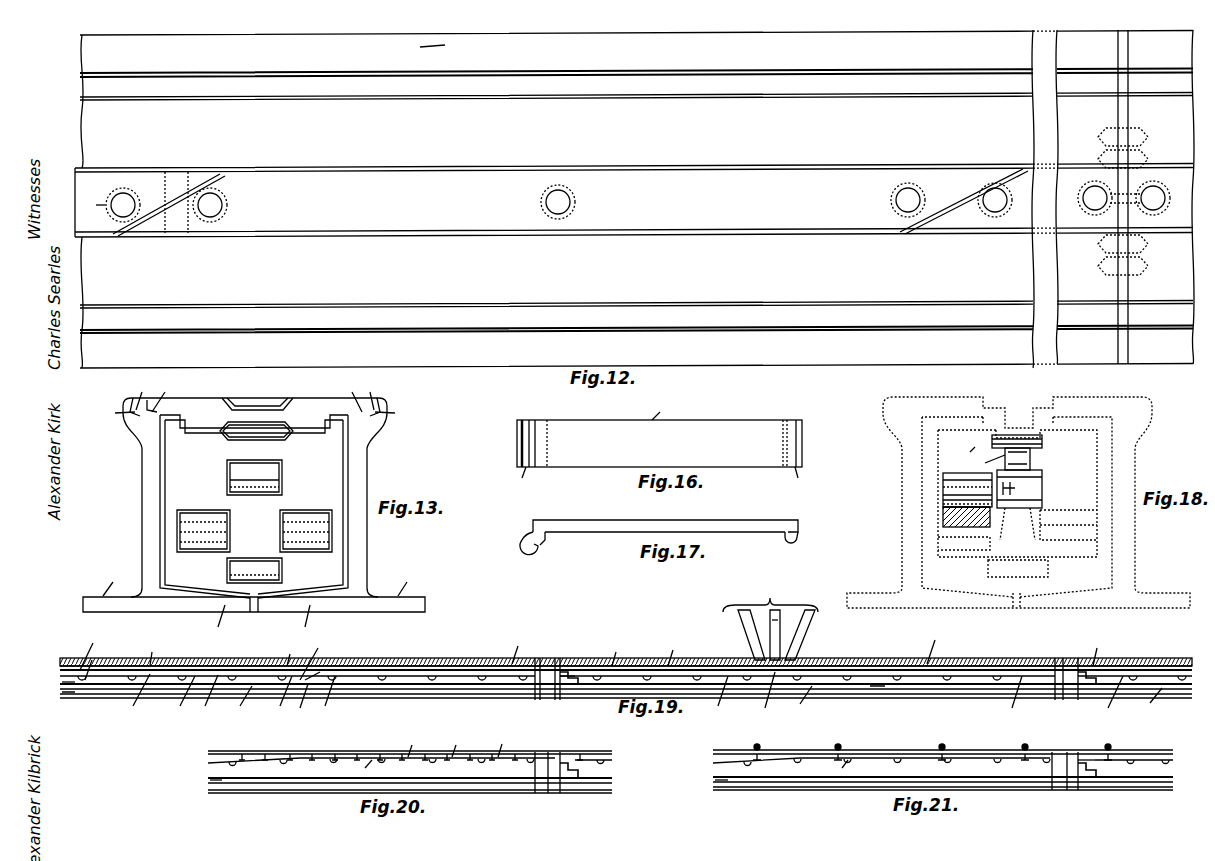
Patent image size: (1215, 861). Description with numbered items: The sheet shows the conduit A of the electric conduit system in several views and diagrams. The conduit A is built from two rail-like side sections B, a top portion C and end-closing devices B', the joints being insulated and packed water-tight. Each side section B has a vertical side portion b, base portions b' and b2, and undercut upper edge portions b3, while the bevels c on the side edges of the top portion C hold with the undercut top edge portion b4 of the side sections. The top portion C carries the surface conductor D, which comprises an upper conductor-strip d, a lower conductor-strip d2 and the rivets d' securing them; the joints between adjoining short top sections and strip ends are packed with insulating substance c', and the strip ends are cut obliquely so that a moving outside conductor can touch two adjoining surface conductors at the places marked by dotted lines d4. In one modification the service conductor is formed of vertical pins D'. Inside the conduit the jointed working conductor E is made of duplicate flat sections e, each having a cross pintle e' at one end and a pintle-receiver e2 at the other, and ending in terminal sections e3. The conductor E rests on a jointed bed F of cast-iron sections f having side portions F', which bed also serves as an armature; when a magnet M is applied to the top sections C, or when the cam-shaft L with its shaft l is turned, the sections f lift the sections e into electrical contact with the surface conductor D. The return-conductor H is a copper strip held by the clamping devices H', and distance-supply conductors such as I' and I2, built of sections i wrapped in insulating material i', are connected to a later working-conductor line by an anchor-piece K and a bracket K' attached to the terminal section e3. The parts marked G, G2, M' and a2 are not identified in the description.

In FIG. 12, the conduit A is at (852, 197).
In FIG. 13, the conduit A is at (256, 497).
In FIG. 19, the conduit A is at (626, 652).
In FIG. 20, the conduit A is at (411, 745).
In FIG. 21, the conduit A is at (944, 745).
In FIG. 12, the side rail-like section B is at (636, 200).
In FIG. 13, the side rail-like section B is at (254, 553).
In FIG. 18, the side rail-like section B is at (1018, 502).
In FIG. 19, the side rail-like section B is at (695, 701).
In FIG. 13, the end-closing device B' is at (254, 506).
In FIG. 19, the end-closing device B' is at (809, 662).
In FIG. 20, the end-closing device B' is at (548, 759).
In FIG. 21, the end-closing device B' is at (1065, 757).
In FIG. 12, the top portion C is at (757, 196).
In FIG. 13, the top portion C is at (197, 412).
In FIG. 19, the top portion C is at (1145, 668).
In FIG. 20, the top portion C is at (288, 757).
In FIG. 21, the top portion C is at (886, 757).
In FIG. 12, the surface electric conductor D is at (634, 201).
In FIG. 13, the surface electric conductor D is at (257, 392).
In FIG. 19, the surface electric conductor D is at (102, 660).
In FIG. 20, the surface electric conductor D is at (414, 744).
In FIG. 21, the vertical pin D' is at (929, 737).
In FIG. 18, the jointed working conductor E is at (1020, 455).
In FIG. 19, the jointed working conductor E is at (626, 679).
In FIG. 20, the jointed working conductor E is at (410, 768).
In FIG. 21, the jointed working conductor E is at (943, 767).
In FIG. 19, the jointed bed F is at (646, 700).
In FIG. 18, the side portion F' is at (963, 452).
In FIG. 18, the spring block G is at (1042, 445).
In FIG. 18, the lower spring guide G2 is at (1017, 532).
In FIG. 18, the return-conductor H is at (1017, 543).
In FIG. 19, the return-conductor H is at (626, 702).
In FIG. 20, the return-conductor H is at (410, 797).
In FIG. 21, the return-conductor H is at (943, 795).
In FIG. 18, the clamping device H' is at (1022, 503).
In FIG. 18, the distance-supply conductor I' is at (931, 528).
In FIG. 19, the distance-supply conductor I' is at (67, 680).
In FIG. 19, the distance-supply conductor I2 is at (472, 684).
In FIG. 20, the distance-supply conductor I2 is at (210, 775).
In FIG. 21, the distance-supply conductor I2 is at (714, 775).
In FIG. 18, the anchor-piece K is at (932, 517).
In FIG. 18, the bracket K' is at (1029, 489).
In FIG. 19, the cam-shaft L is at (282, 698).
In FIG. 19, the magnet M is at (770, 620).
In FIG. 19, the wrench prong M' is at (768, 630).
In FIG. 13, the cap notch a2 is at (257, 393).
In FIG. 13, the vertical side portion b is at (254, 523).
In FIG. 12, the base portion b' is at (565, 199).
In FIG. 13, the base portion b' is at (255, 587).
In FIG. 13, the base portion b2 is at (261, 621).
In FIG. 12, the undercut upper edge portion b3 is at (636, 200).
In FIG. 13, the undercut upper edge portion b3 is at (261, 392).
In FIG. 13, the undercut top edge portion b4 is at (257, 410).
In FIG. 13, the bevel c is at (250, 406).
In FIG. 12, the insulating packing substance c' is at (561, 200).
In FIG. 13, the insulating packing substance c' is at (266, 479).
In FIG. 12, the upper side conductor-strip d is at (632, 195).
In FIG. 13, the upper side conductor-strip d is at (256, 407).
In FIG. 18, the upper side conductor-strip d is at (1018, 406).
In FIG. 19, the upper side conductor-strip d is at (693, 650).
In FIG. 20, the upper side conductor-strip d is at (455, 744).
In FIG. 12, the rivet d' is at (642, 198).
In FIG. 19, the rivet d' is at (410, 651).
In FIG. 20, the rivet d' is at (500, 743).
In FIG. 19, the lower side conductor-strip d2 is at (514, 647).
In FIG. 12, the dotted lines d4 is at (172, 172).
In FIG. 16, the section e is at (659, 443).
In FIG. 17, the section e is at (665, 507).
In FIG. 19, the section e is at (586, 677).
In FIG. 21, the section e is at (1013, 770).
In FIG. 16, the pintle e' is at (801, 478).
In FIG. 17, the pintle e' is at (805, 541).
In FIG. 16, the pintle-receiver e2 is at (526, 478).
In FIG. 17, the pintle-receiver e2 is at (538, 546).
In FIG. 18, the terminal section e3 is at (980, 464).
In FIG. 19, the terminal section e3 is at (815, 678).
In FIG. 20, the terminal section e3 is at (580, 771).
In FIG. 21, the terminal section e3 is at (1077, 769).
In FIG. 16, the section f is at (656, 408).
In FIG. 19, the section f is at (573, 697).
In FIG. 19, the section i is at (553, 693).
In FIG. 20, the section i is at (366, 772).
In FIG. 21, the section i is at (842, 770).
In FIG. 19, the insulating material i' is at (311, 656).
In FIG. 19, the shaft portion l is at (303, 702).